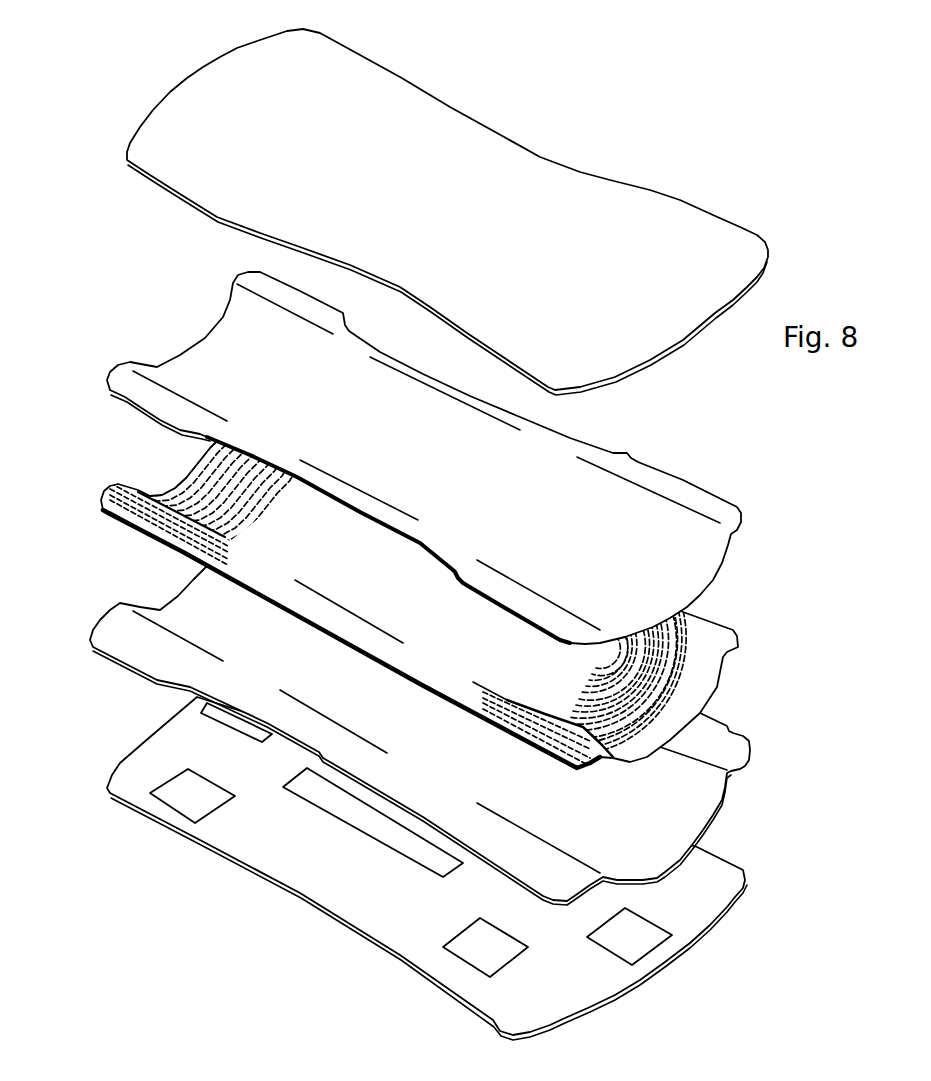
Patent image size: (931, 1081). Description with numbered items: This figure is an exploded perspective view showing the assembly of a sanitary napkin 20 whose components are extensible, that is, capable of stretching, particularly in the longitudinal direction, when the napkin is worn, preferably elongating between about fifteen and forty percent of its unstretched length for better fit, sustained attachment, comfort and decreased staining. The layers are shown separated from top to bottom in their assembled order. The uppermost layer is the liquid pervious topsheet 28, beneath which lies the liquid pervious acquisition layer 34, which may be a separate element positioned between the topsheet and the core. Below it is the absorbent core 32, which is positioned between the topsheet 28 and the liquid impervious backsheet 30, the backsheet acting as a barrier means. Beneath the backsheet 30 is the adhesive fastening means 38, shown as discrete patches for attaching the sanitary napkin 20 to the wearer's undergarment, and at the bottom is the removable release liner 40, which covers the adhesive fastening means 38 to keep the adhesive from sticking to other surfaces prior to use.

The sanitary napkin 20 is at (556, 88).
The liquid pervious topsheet 28 is at (478, 197).
The liquid pervious acquisition layer 34 is at (683, 488).
The absorbent core 32 is at (110, 494).
The liquid impervious backsheet 30 is at (720, 738).
The removable release liner 40 is at (135, 769).
The adhesive fastening means 38 is at (380, 803).